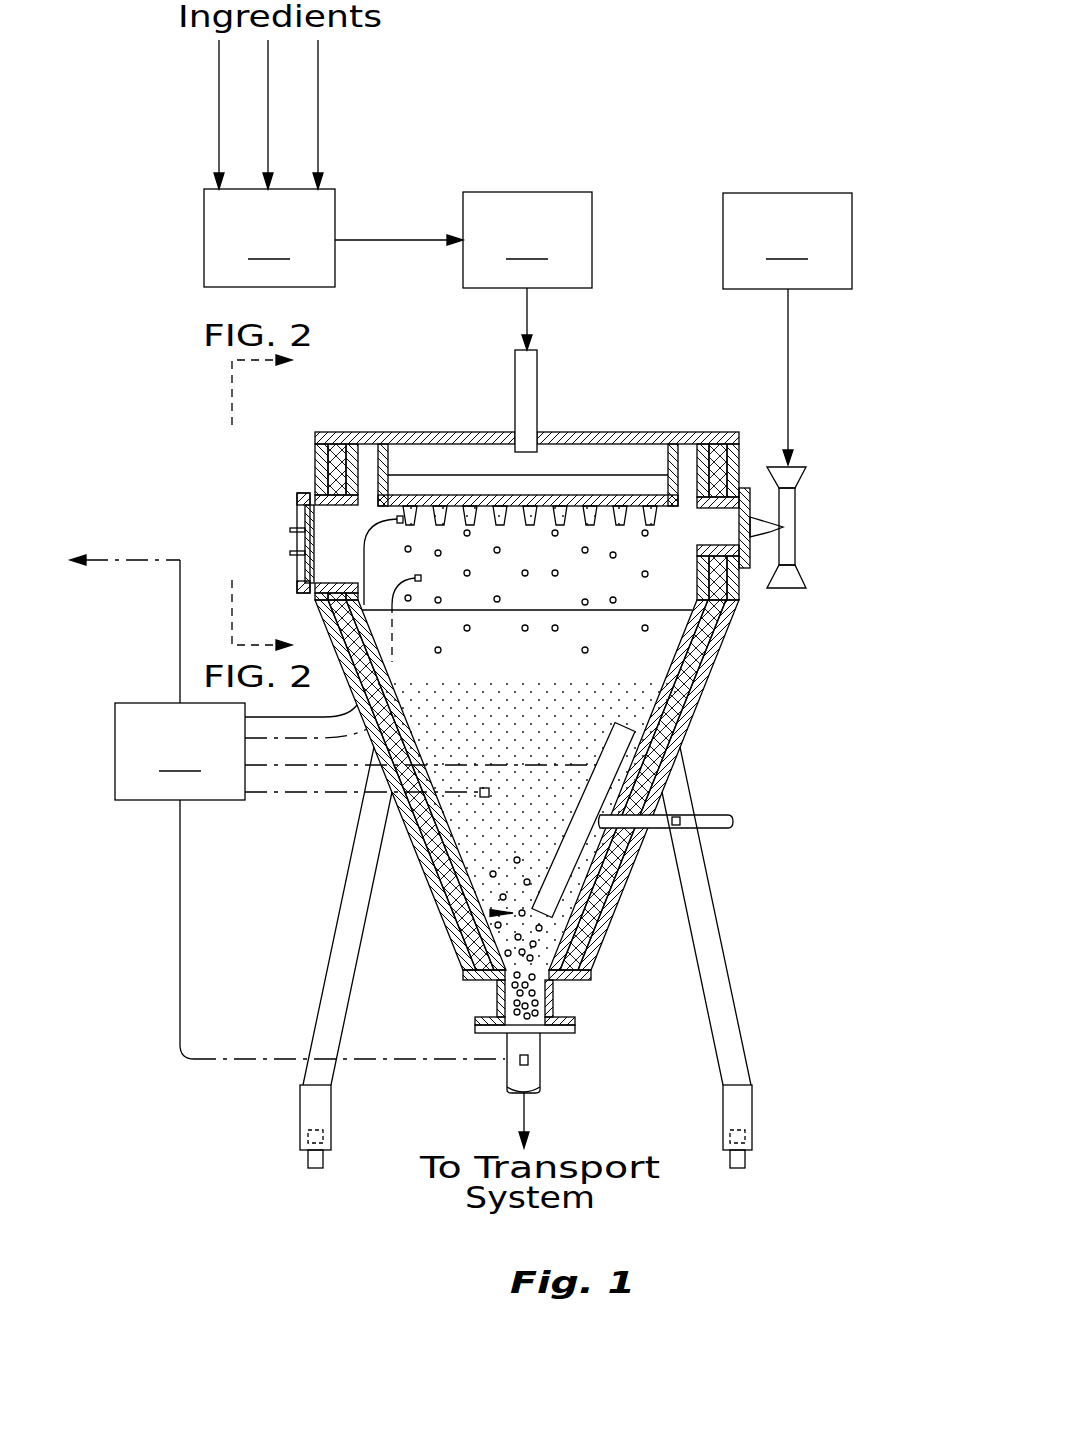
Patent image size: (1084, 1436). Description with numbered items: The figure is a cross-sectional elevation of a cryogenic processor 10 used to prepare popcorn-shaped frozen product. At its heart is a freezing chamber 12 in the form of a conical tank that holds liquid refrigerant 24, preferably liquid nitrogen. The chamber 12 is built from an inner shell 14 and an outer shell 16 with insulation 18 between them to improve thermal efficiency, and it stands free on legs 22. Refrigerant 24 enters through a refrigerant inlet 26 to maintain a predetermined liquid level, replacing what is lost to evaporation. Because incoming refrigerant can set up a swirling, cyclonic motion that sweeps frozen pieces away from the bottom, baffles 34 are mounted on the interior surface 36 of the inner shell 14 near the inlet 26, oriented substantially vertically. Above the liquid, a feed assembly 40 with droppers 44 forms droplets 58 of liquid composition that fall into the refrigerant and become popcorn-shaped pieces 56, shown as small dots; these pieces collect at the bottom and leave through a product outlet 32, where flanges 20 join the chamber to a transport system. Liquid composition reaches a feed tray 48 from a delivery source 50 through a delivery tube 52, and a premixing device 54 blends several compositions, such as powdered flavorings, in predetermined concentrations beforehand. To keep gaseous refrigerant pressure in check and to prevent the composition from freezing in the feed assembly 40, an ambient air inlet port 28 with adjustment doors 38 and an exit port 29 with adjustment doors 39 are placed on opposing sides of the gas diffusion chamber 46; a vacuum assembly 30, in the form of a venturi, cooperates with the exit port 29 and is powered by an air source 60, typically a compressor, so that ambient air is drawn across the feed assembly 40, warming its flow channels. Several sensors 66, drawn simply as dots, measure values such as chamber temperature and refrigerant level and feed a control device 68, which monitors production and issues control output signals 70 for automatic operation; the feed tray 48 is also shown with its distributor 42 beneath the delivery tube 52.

The cryogenic processor 10 is at (795, 1197).
The freezing chamber 12 is at (535, 810).
The inner shell 14 is at (557, 717).
The outer shell 16 is at (712, 668).
The insulation 18 is at (707, 700).
The outlet flange 20 is at (485, 980).
The legs 22 is at (737, 1058).
The refrigerant 24 is at (622, 772).
The refrigerant inlet 26 is at (734, 822).
The ambient air inlet port 28 is at (282, 512).
The exit port 29 is at (728, 529).
The vacuum assembly 30 is at (815, 470).
The product outlet 32 is at (543, 1052).
The baffles 34 is at (568, 843).
The interior surface 36 is at (600, 930).
The adjustment doors 38 is at (293, 567).
The adjustment doors 39 is at (795, 578).
The feed assembly 40 is at (625, 465).
The distributor plate 42 is at (458, 472).
The droppers 44 is at (567, 500).
The gas diffusion chamber 46 is at (655, 596).
The feed tray 48 is at (400, 510).
The delivery source 50 is at (527, 240).
The delivery tube 52 is at (524, 378).
The premixing device 54 is at (333, 238).
The popcorn-shaped pieces 56 is at (489, 913).
The droplets 58 is at (647, 629).
The air source 60 is at (787, 241).
The sensors 66 is at (483, 797).
The control device 68 is at (356, 751).
The control output signals 70 is at (137, 557).